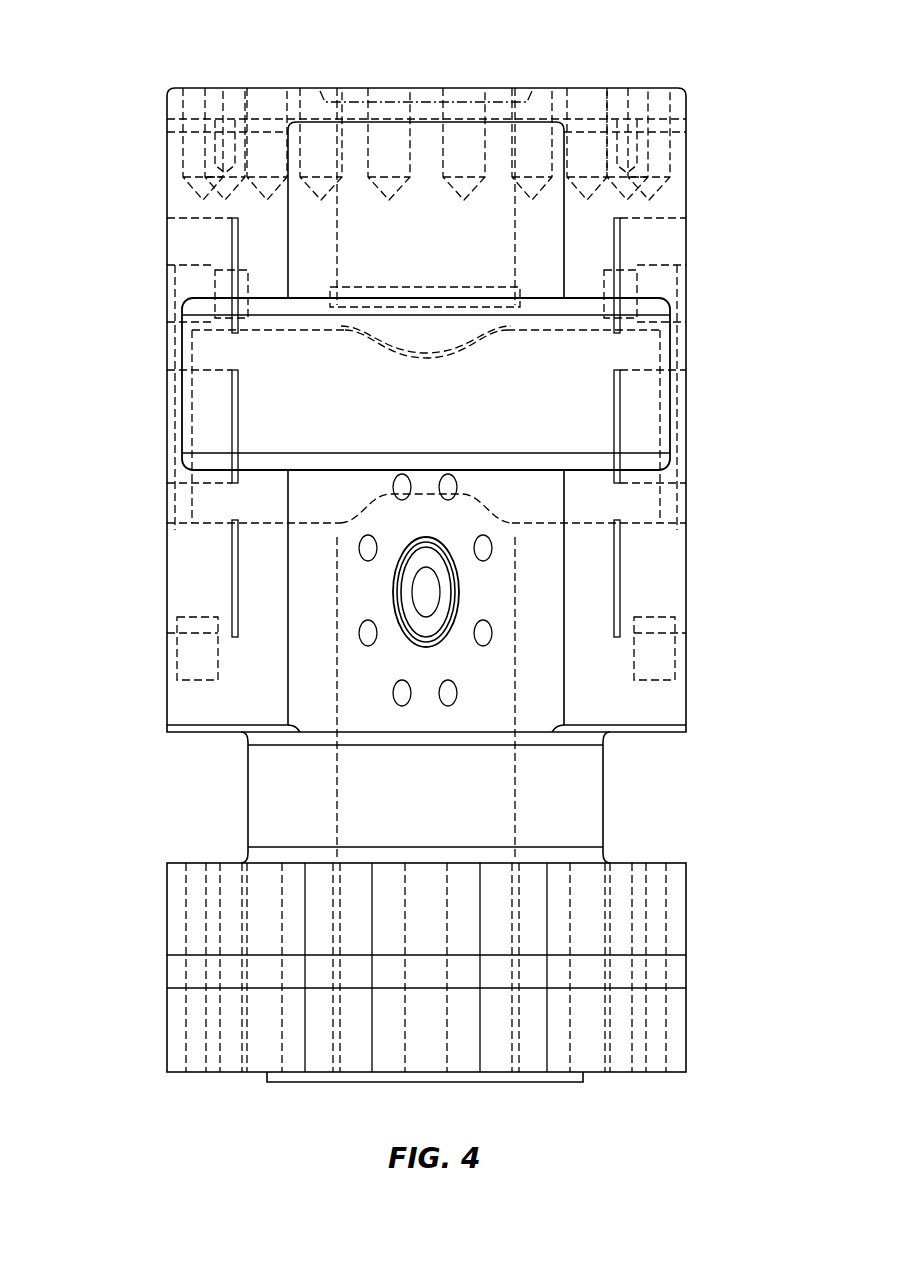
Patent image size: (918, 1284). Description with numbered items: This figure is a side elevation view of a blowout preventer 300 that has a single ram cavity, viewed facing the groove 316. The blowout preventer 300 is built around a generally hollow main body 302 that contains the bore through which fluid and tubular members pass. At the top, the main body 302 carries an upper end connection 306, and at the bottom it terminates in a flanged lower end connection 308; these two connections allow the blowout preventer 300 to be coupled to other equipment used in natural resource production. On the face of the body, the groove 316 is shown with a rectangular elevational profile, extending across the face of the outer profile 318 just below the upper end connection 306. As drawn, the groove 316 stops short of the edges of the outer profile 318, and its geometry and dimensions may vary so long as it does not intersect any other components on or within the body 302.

The blowout preventer 300 is at (135, 46).
The main body 302 is at (686, 166).
The upper end connection 306 is at (286, 88).
The flanged lower end connection 308 is at (587, 1072).
The groove 316 is at (640, 362).
The outer profile 318 is at (667, 575).